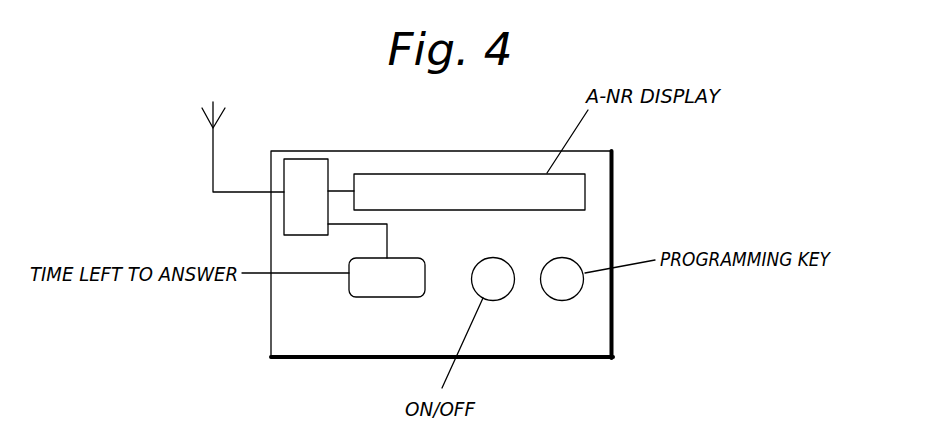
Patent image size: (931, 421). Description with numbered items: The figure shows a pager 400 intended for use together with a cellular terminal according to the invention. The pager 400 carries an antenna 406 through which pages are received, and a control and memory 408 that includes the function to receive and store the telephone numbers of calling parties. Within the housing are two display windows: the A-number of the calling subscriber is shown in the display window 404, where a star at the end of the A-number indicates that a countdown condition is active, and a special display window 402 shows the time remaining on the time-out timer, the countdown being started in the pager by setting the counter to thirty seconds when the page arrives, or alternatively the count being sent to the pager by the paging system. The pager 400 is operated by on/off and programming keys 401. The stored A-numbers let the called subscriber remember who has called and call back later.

The pager 400 is at (614, 190).
The on/off and programming keys 401 is at (505, 293).
The special display window 402 is at (387, 297).
The display window 404 is at (463, 174).
The antenna 406 is at (213, 152).
The control and memory 408 is at (305, 159).